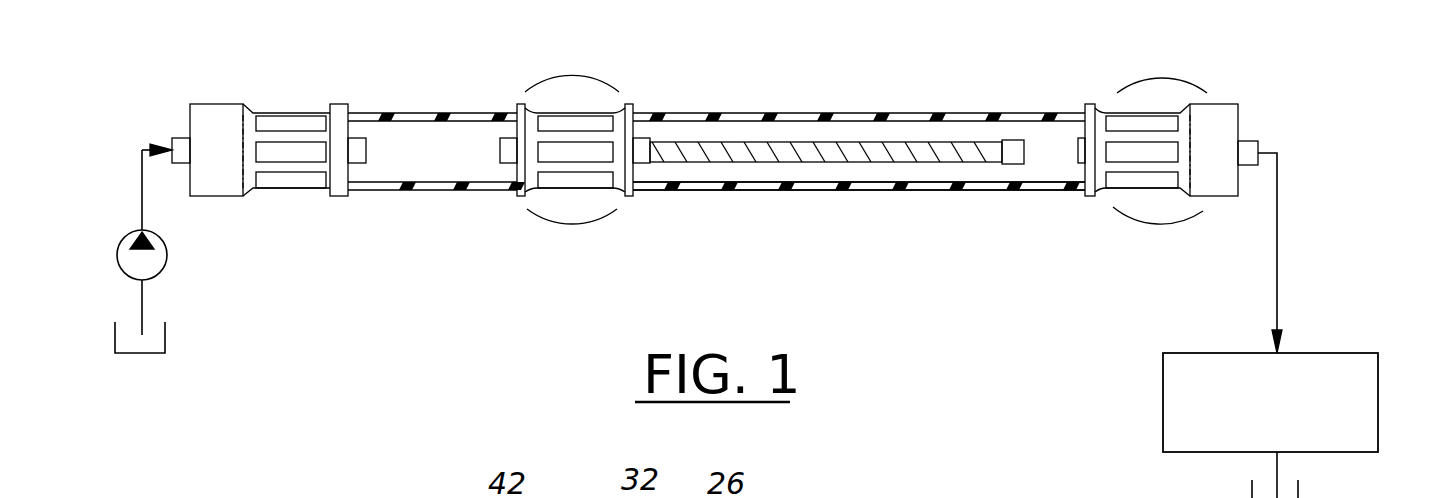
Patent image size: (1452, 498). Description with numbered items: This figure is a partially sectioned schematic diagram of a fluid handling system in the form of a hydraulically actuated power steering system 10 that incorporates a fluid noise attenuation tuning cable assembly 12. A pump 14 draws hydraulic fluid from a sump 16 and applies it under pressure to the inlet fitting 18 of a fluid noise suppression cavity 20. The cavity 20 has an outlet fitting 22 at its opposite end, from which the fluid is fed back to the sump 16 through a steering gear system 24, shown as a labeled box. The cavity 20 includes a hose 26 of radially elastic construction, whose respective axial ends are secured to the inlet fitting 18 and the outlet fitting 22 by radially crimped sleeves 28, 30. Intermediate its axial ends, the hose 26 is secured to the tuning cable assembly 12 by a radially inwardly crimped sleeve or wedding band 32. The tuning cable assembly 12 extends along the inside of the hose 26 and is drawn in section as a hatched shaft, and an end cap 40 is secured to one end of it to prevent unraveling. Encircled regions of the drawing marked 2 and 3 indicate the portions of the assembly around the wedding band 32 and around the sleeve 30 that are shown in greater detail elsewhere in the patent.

The power steering system 10 is at (793, 70).
The tuning cable assembly 12 is at (835, 133).
The pump 14 is at (167, 255).
The sump 16 is at (165, 336).
The inlet fitting 18 is at (181, 139).
The fluid noise suppression cavity 20 is at (951, 105).
The outlet fitting 22 is at (1253, 147).
The steering gear system 24 is at (1358, 353).
The hose 26 is at (750, 191).
The radially crimped sleeve 28 is at (214, 108).
The radially crimped sleeve 30 is at (1215, 113).
The wedding band 32 is at (624, 103).
The end cap 40 is at (1018, 143).
The section 2 indicator 2 is at (598, 219).
The section 3 indicator 3 is at (1132, 222).